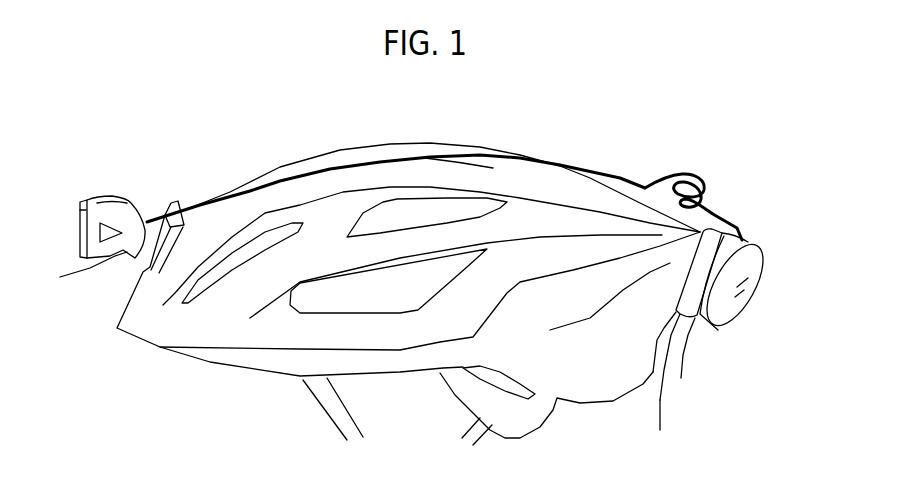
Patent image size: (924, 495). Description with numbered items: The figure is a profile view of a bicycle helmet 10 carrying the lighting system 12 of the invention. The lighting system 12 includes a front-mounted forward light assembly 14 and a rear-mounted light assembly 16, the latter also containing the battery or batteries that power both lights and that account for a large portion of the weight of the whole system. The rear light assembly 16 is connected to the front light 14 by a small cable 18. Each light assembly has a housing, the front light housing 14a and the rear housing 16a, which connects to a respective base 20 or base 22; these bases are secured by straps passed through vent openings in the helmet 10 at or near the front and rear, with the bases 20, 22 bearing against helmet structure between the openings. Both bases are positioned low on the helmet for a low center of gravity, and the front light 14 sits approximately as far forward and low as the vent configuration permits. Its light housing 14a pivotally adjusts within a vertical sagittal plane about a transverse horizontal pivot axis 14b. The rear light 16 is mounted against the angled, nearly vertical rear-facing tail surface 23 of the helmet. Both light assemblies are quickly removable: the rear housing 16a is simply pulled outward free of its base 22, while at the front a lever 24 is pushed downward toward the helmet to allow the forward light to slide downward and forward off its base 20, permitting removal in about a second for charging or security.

The bicycle helmet 10 is at (273, 318).
The lighting system 12 is at (778, 163).
The forward light assembly 14 is at (107, 200).
The light housing 14a is at (146, 212).
The transverse horizontal pivot axis 14b is at (80, 258).
The rear-mounted light assembly 16 is at (712, 337).
The rear housing 16a is at (686, 360).
The cable 18 is at (672, 173).
The base 20 is at (137, 270).
The base 22 is at (676, 427).
The rear-facing tail surface 23 is at (732, 222).
The lever 24 is at (182, 210).